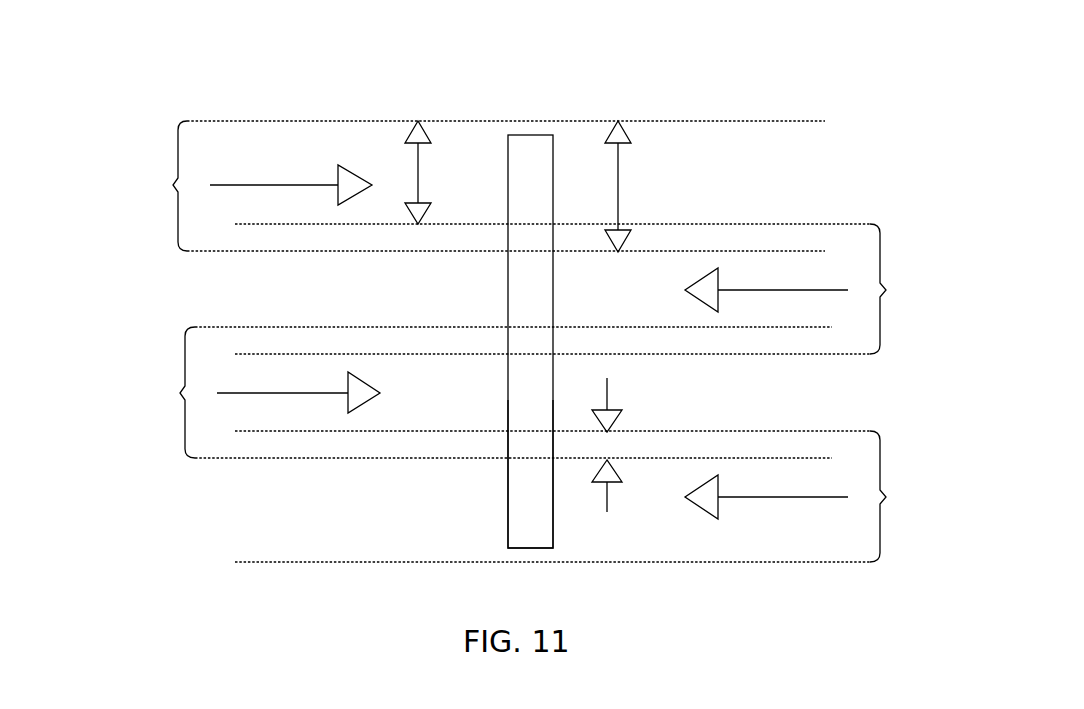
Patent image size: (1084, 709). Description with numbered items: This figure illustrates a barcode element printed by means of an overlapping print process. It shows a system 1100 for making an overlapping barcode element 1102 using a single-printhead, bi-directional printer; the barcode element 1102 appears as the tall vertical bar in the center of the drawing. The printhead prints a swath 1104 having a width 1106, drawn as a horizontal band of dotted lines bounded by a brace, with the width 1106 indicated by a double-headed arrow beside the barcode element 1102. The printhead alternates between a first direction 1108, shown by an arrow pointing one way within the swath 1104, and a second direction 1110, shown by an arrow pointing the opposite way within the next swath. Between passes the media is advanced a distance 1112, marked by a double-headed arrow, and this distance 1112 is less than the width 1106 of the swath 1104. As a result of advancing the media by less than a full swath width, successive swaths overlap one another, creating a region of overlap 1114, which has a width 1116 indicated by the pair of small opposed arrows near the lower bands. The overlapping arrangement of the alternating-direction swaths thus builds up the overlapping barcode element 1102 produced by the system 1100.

The system 1100 is at (423, 63).
The overlapping barcode element 1102 is at (530, 134).
The swath 1104 is at (483, 187).
The width 1106 is at (620, 185).
The first direction 1108 is at (275, 187).
The second direction 1110 is at (783, 288).
The distance 1112 is at (418, 173).
The region of overlap 1114 is at (528, 442).
The width 1116 is at (607, 393).